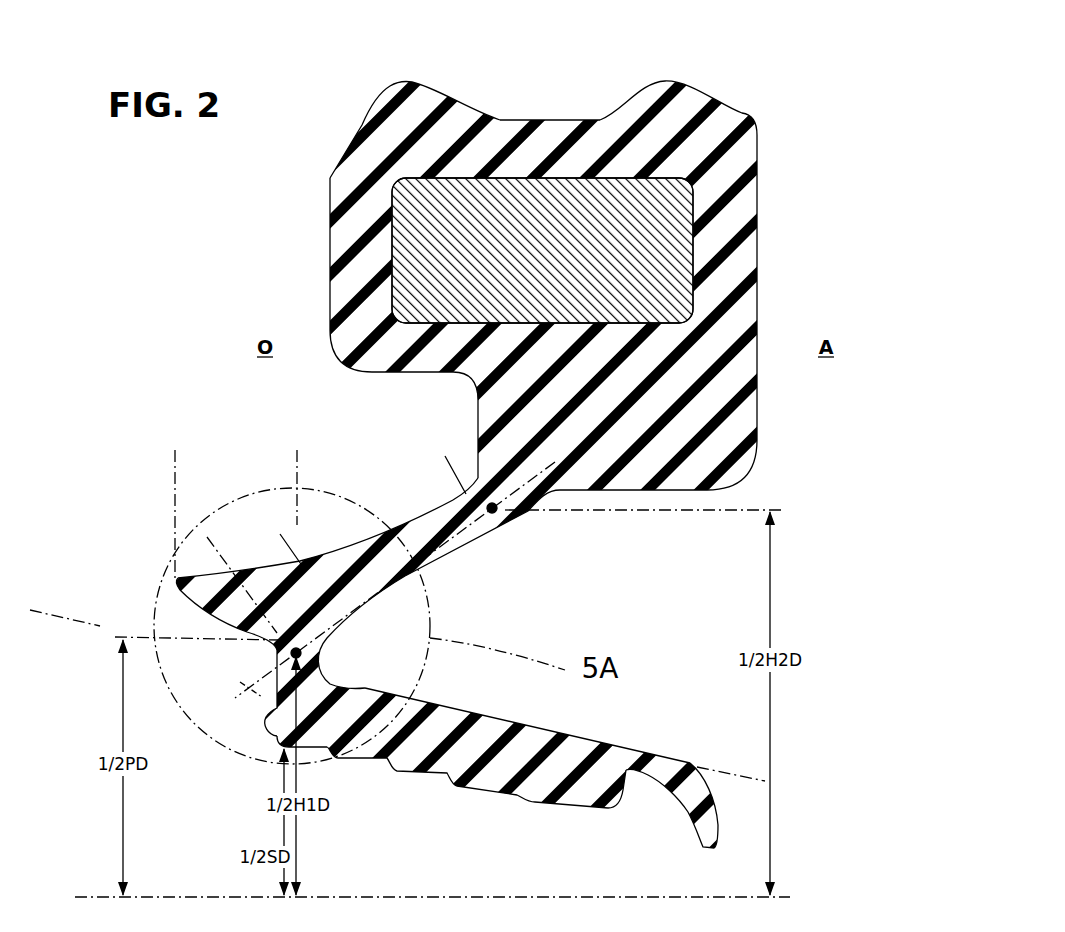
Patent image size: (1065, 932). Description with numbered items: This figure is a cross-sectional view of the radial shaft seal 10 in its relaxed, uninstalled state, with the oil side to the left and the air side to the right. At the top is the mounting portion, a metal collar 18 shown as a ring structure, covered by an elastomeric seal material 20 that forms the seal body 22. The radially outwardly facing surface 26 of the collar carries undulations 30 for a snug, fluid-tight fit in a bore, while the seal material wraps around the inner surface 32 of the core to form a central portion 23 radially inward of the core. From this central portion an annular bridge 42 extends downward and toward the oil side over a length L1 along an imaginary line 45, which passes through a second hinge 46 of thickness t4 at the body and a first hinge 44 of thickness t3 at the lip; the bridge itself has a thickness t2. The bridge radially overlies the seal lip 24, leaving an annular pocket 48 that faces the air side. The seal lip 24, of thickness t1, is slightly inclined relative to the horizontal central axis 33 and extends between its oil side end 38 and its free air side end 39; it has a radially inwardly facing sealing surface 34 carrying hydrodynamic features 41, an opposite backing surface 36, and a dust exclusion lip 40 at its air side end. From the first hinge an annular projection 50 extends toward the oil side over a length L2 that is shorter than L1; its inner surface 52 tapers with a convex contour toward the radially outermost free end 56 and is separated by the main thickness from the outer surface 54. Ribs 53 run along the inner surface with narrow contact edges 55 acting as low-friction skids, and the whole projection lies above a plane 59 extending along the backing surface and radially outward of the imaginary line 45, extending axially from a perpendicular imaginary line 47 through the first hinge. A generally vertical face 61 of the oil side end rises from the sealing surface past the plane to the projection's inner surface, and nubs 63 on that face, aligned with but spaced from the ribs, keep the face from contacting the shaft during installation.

The seal 10 is at (672, 46).
The collar 18 is at (700, 243).
The elastomeric seal material 20 is at (745, 118).
The seal body 22 is at (750, 316).
The central portion 23 is at (476, 378).
The seal lip 24 is at (567, 744).
The radially outwardly facing surface 26 is at (518, 163).
The undulations 30 is at (410, 80).
The inner surface 32 is at (380, 372).
The horizontal central axis 33 is at (542, 893).
The sealing surface 34 is at (455, 795).
The backing surface 36 is at (473, 714).
The oil side end 38 is at (266, 731).
The free air side end 39 is at (618, 792).
The dust exclusion lip 40 is at (718, 813).
The hydrodynamic features 41 is at (392, 778).
The annular bridge 42 is at (448, 507).
The first hinge 44 is at (337, 655).
The imaginary line 45 is at (235, 685).
The second hinge 46 is at (533, 520).
The imaginary line 47 is at (243, 566).
The annular pocket 48 is at (570, 633).
The annular projection 50 is at (205, 608).
The inner surface 52 is at (270, 632).
The ribs 53 is at (237, 625).
The outer surface 54 is at (265, 569).
The contact edges 55 is at (192, 633).
The free end 56 is at (176, 578).
The plane 59 is at (63, 613).
The face 61 is at (275, 662).
The nubs 63 is at (262, 714).
The seal lip thickness t1 is at (512, 792).
The bridge thickness t2 is at (395, 497).
The first hinge thickness t3 is at (345, 648).
The second hinge thickness t4 is at (514, 522).
The bridge length L1 is at (283, 540).
The projection length L2 is at (175, 458).